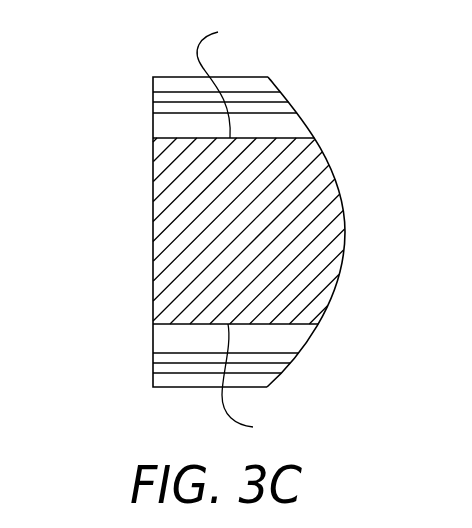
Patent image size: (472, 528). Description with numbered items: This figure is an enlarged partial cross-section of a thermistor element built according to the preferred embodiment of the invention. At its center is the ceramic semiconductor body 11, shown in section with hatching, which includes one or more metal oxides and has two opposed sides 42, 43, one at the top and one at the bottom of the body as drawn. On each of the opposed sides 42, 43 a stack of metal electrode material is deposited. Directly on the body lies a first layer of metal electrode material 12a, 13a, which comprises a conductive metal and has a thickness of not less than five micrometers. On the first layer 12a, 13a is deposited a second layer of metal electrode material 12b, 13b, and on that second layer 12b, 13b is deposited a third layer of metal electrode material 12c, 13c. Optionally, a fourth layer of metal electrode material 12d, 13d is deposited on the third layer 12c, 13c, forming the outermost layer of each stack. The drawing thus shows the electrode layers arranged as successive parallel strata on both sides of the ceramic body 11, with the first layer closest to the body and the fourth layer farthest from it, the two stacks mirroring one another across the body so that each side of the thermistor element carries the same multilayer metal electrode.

The ceramic semiconductor body 11 is at (150, 233).
The first layer of metal electrode material 12a is at (150, 127).
The second layer of metal electrode material 12b is at (300, 103).
The third layer of metal electrode material 12c is at (148, 93).
The fourth layer of metal electrode material 12d is at (278, 74).
The first layer of metal electrode material 13a is at (315, 342).
The second layer of metal electrode material 13b is at (150, 356).
The third layer of metal electrode material 13c is at (292, 375).
The fourth layer of metal electrode material 13d is at (152, 386).
The opposed side 42 is at (223, 76).
The opposed side 43 is at (251, 383).